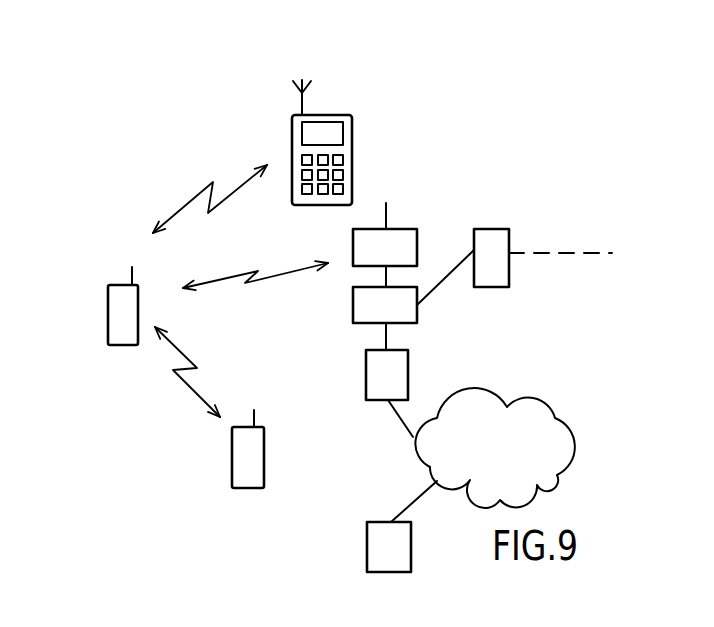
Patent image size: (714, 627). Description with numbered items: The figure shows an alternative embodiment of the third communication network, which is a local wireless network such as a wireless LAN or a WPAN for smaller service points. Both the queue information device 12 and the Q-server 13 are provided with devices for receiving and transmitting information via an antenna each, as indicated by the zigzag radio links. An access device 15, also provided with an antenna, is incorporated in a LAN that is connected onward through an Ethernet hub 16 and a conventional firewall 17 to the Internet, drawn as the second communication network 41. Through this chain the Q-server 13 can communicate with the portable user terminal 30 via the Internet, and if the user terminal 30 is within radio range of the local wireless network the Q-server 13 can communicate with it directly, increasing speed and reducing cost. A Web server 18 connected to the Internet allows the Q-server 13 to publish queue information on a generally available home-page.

The queue information device 12 is at (265, 454).
The Q-server 13 is at (108, 301).
The access device 15 is at (400, 263).
The Ethernet hub 16 is at (400, 321).
The firewall 17 is at (396, 387).
The Web server 18 is at (402, 562).
The user terminal 30 is at (352, 130).
The second communication network 41 is at (510, 466).